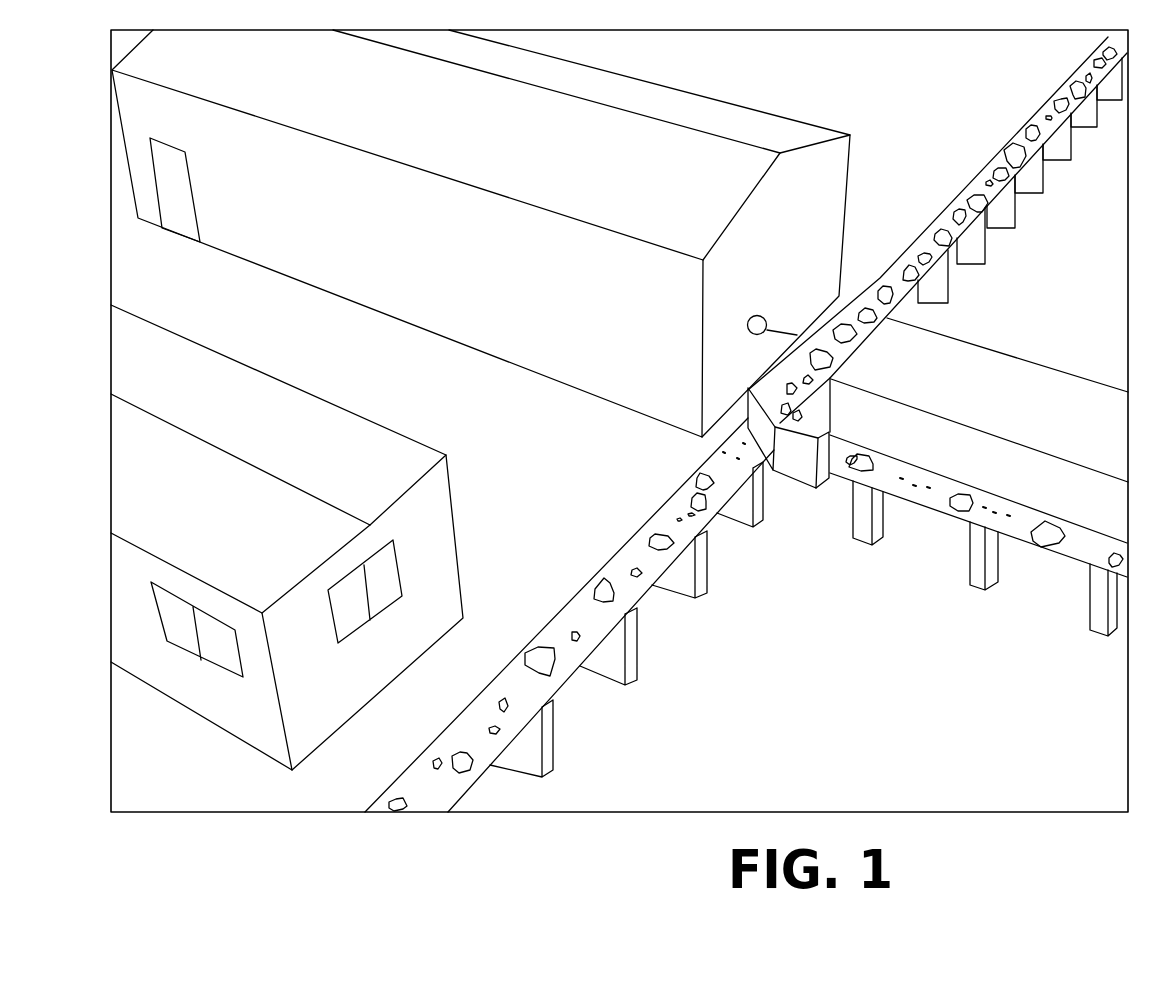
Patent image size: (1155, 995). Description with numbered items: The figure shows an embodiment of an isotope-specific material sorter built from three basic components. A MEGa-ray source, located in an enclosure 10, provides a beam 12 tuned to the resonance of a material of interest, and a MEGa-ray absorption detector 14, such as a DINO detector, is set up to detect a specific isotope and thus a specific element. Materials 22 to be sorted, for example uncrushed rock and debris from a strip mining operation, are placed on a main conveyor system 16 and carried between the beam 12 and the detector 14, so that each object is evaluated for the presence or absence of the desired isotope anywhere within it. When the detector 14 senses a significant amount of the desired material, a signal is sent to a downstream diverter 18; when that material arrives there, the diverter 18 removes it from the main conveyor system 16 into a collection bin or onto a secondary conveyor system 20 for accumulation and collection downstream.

The enclosure 10 is at (662, 182).
The beam 12 is at (767, 329).
The MEGa-ray absorption detector 14 is at (1036, 407).
The main conveyor system 16 is at (1015, 191).
The diverter 18 is at (746, 418).
The secondary conveyor system 20 is at (930, 498).
The materials 22 is at (1073, 80).